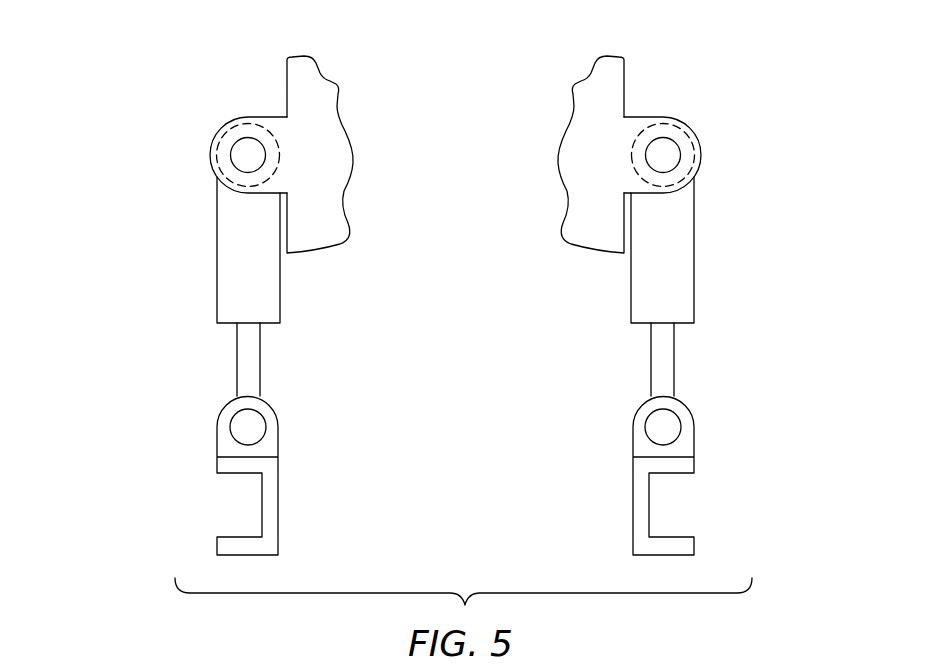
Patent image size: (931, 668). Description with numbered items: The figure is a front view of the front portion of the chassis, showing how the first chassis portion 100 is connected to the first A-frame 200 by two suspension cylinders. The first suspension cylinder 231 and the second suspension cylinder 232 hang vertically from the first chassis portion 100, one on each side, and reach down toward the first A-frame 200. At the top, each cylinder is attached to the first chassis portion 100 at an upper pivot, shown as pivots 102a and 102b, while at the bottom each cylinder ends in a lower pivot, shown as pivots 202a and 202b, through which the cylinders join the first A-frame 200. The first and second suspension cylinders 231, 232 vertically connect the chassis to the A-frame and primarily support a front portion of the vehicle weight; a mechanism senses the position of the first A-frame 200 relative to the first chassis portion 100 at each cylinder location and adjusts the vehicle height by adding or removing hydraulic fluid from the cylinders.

The first chassis portion 100 is at (298, 88).
The first pivot 102a is at (663, 153).
The second pivot 102b is at (245, 153).
The first suspension cylinder 231 is at (688, 272).
The second suspension cylinder 232 is at (232, 283).
The first lower pivot 202a is at (662, 427).
The second lower pivot 202b is at (245, 425).
The first A-frame 200 is at (306, 503).